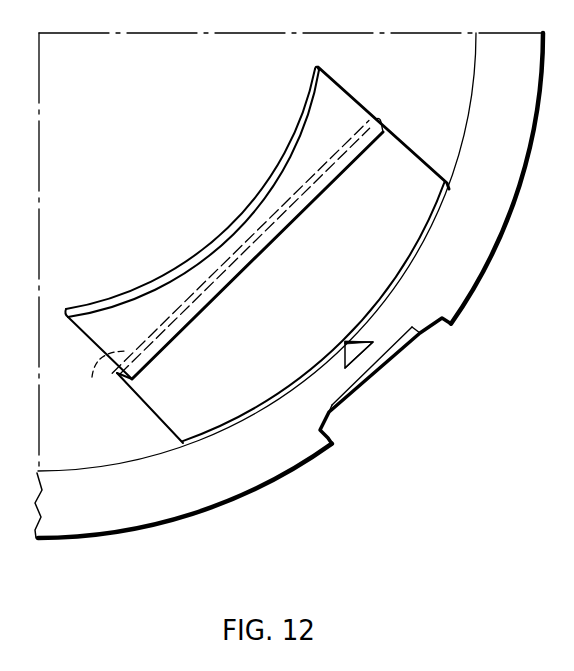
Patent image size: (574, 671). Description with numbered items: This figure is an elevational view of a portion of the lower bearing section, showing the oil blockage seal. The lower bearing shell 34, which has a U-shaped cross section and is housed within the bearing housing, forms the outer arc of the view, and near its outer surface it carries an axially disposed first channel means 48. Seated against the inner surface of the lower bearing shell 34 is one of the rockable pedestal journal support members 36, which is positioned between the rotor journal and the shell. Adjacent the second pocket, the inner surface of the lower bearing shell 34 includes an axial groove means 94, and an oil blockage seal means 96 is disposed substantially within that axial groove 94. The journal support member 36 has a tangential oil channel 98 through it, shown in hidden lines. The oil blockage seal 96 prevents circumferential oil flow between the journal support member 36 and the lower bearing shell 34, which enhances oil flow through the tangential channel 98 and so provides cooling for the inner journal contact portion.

The lower bearing shell 34 is at (235, 499).
The rockable pedestal journal support member 36 is at (400, 138).
The first channel means 48 is at (333, 441).
The axial groove means 94 is at (372, 338).
The oil blockage seal means 96 is at (345, 358).
The tangential oil channel 98 is at (104, 377).